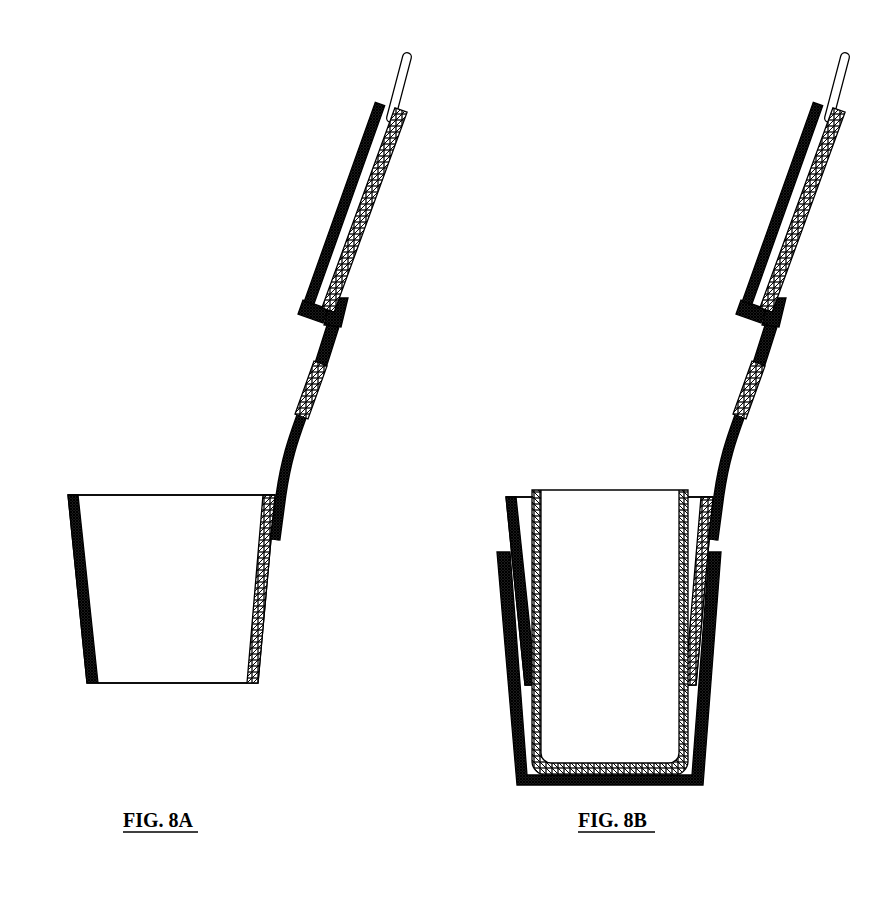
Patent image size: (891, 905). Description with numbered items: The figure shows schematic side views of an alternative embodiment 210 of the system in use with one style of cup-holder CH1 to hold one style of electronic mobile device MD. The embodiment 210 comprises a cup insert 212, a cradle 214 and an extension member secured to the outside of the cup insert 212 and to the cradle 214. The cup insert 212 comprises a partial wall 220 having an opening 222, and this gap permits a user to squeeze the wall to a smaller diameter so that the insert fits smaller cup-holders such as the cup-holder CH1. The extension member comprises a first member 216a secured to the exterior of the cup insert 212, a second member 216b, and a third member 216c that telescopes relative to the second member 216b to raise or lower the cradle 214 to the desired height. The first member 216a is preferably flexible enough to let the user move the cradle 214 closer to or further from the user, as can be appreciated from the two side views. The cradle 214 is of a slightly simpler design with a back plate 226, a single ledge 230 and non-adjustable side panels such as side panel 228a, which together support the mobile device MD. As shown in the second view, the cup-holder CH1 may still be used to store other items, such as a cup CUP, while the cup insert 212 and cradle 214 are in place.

In FIG. 8A, the alternative embodiment 210 is at (132, 327).
In FIG. 8B, the alternative embodiment 210 is at (570, 327).
In FIG. 8A, the cup insert 212 is at (69, 493).
In FIG. 8B, the cup insert 212 is at (583, 465).
In FIG. 8A, the cradle 214 is at (336, 211).
In FIG. 8B, the cradle 214 is at (774, 211).
In FIG. 8A, the first member 216a is at (286, 474).
In FIG. 8B, the first member 216a is at (766, 479).
In FIG. 8A, the second member 216b is at (320, 392).
In FIG. 8B, the second member 216b is at (790, 390).
In FIG. 8A, the third member 216c is at (336, 346).
In FIG. 8B, the third member 216c is at (808, 332).
In FIG. 8A, the partial wall 220 is at (185, 581).
In FIG. 8A, the opening 222 is at (77, 596).
In FIG. 8B, the opening 222 is at (576, 591).
In FIG. 8A, the back plate 226 is at (376, 197).
In FIG. 8B, the back plate 226 is at (821, 210).
In FIG. 8A, the side panel 228a is at (348, 177).
In FIG. 8B, the side panel 228a is at (757, 203).
In FIG. 8A, the ledge 230 is at (302, 306).
In FIG. 8B, the ledge 230 is at (716, 315).
In FIG. 8A, the mobile device MD is at (397, 78).
In FIG. 8B, the mobile device MD is at (785, 87).
In FIG. 8B, the cup CUP is at (605, 512).
In FIG. 8B, the cup-holder CH1 is at (496, 578).